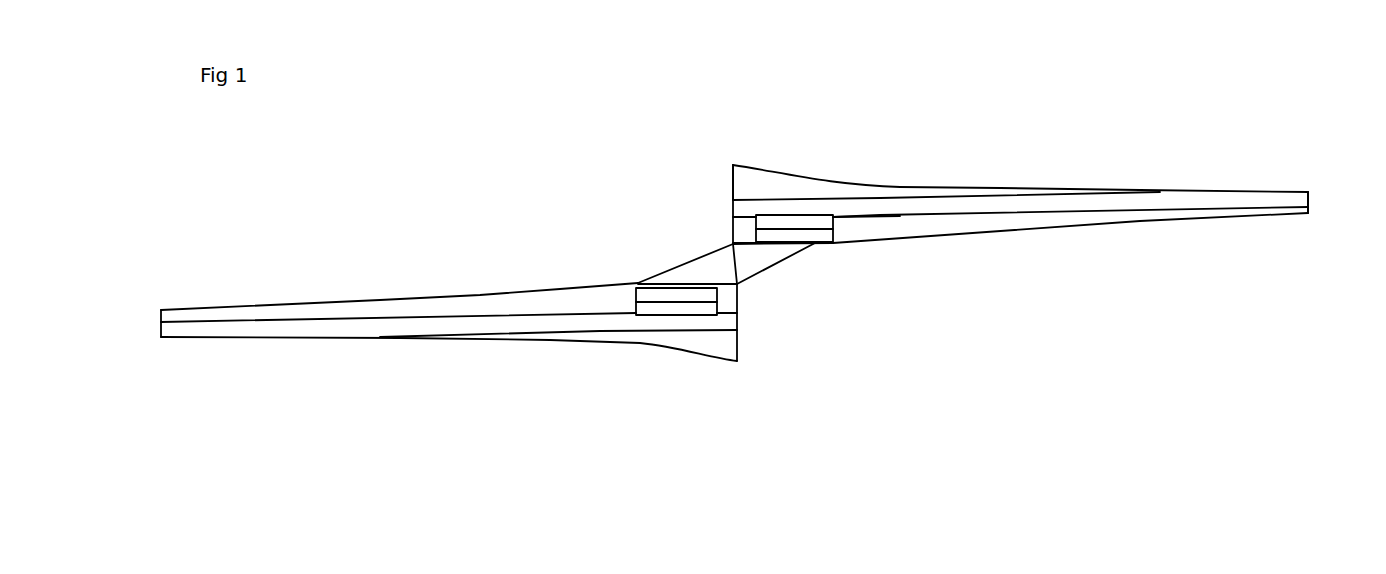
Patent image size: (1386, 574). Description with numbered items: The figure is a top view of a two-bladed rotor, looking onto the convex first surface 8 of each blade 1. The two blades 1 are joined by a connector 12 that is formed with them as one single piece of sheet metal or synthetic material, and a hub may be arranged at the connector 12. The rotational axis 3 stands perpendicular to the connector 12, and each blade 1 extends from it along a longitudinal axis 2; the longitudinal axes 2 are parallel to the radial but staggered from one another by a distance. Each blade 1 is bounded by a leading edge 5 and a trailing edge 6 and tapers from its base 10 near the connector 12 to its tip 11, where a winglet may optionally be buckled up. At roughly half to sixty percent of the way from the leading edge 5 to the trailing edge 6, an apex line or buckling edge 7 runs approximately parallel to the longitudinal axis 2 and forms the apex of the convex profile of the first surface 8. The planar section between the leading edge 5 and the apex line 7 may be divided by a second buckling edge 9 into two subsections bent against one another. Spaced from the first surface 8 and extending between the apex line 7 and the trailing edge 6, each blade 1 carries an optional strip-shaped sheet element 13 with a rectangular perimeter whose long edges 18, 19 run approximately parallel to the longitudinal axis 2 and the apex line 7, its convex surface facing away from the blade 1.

The blade 1 is at (897, 142).
The longitudinal axis 2 is at (159, 322).
The rotational axis 3 is at (736, 264).
The leading edge 5 is at (1099, 186).
The trailing edge 6 is at (1090, 231).
The apex line 7 is at (731, 217).
The convex first surface 8 is at (866, 214).
The second buckling edge 9 is at (920, 195).
The base 10 is at (732, 153).
The tip 11 is at (1303, 174).
The connector 12 is at (780, 263).
The sheet element 13 is at (818, 228).
The long edge 18 is at (788, 212).
The long edge 19 is at (650, 283).